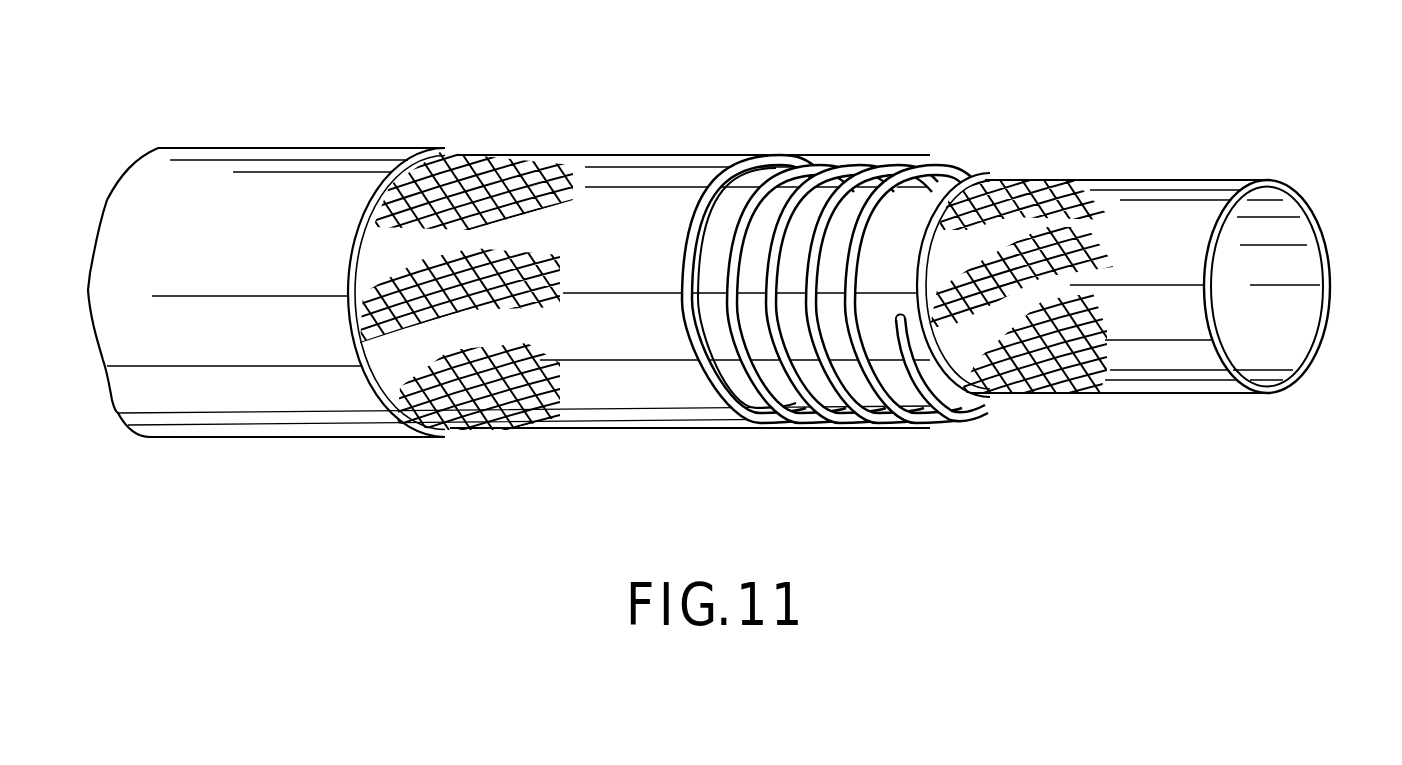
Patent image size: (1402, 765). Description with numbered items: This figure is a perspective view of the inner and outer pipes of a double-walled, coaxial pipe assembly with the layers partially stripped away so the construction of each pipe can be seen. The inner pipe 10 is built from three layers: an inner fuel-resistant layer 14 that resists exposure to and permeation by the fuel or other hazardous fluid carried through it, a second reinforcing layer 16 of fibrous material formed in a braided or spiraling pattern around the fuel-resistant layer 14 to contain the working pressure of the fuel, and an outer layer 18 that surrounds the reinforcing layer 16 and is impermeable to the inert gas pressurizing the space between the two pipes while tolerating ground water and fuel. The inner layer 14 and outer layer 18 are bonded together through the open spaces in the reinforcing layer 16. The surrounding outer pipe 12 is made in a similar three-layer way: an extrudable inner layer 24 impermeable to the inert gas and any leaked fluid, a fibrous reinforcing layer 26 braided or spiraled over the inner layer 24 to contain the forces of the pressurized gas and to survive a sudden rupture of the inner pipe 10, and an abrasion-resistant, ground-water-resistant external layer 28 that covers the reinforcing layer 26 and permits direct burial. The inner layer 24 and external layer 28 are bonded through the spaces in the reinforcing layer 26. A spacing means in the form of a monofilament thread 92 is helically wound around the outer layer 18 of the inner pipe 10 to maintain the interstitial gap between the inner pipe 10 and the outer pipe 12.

The inner pipe 10 is at (1300, 105).
The outer pipe 12 is at (330, 105).
The inner fuel-resistant layer 14 is at (1283, 352).
The reinforcing layer 16 is at (1053, 383).
The outer layer 18 is at (852, 393).
The inner layer 24 is at (618, 405).
The reinforcing layer 26 is at (503, 417).
The external layer 28 is at (263, 413).
The monofilament thread 92 is at (835, 325).